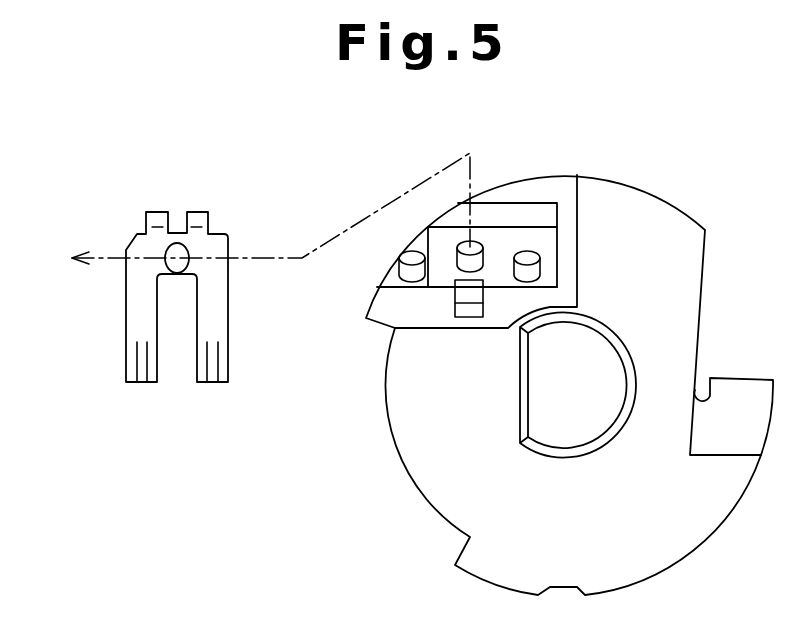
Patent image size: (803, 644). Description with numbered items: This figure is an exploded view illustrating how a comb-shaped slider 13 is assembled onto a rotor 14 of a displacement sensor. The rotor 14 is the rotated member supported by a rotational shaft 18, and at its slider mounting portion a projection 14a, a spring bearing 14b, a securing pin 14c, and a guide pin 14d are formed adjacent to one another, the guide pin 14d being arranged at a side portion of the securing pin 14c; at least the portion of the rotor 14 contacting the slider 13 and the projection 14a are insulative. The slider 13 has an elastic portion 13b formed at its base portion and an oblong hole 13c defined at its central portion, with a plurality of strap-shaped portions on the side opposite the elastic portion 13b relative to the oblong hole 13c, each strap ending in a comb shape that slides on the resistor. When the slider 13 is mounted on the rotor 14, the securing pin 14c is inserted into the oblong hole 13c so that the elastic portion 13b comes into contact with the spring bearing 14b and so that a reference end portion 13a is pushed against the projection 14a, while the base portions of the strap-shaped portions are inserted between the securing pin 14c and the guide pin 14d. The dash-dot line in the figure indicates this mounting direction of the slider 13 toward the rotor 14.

The slider 13 is at (220, 312).
The reference end portion 13a is at (177, 278).
The elastic portion 13b is at (201, 212).
The oblong hole 13c is at (161, 265).
The rotor 14 is at (410, 450).
The projection 14a is at (477, 287).
The spring bearing 14b is at (547, 215).
The securing pin 14c is at (475, 248).
The guide pin 14d is at (412, 275).
The rotational shaft 18 is at (580, 432).